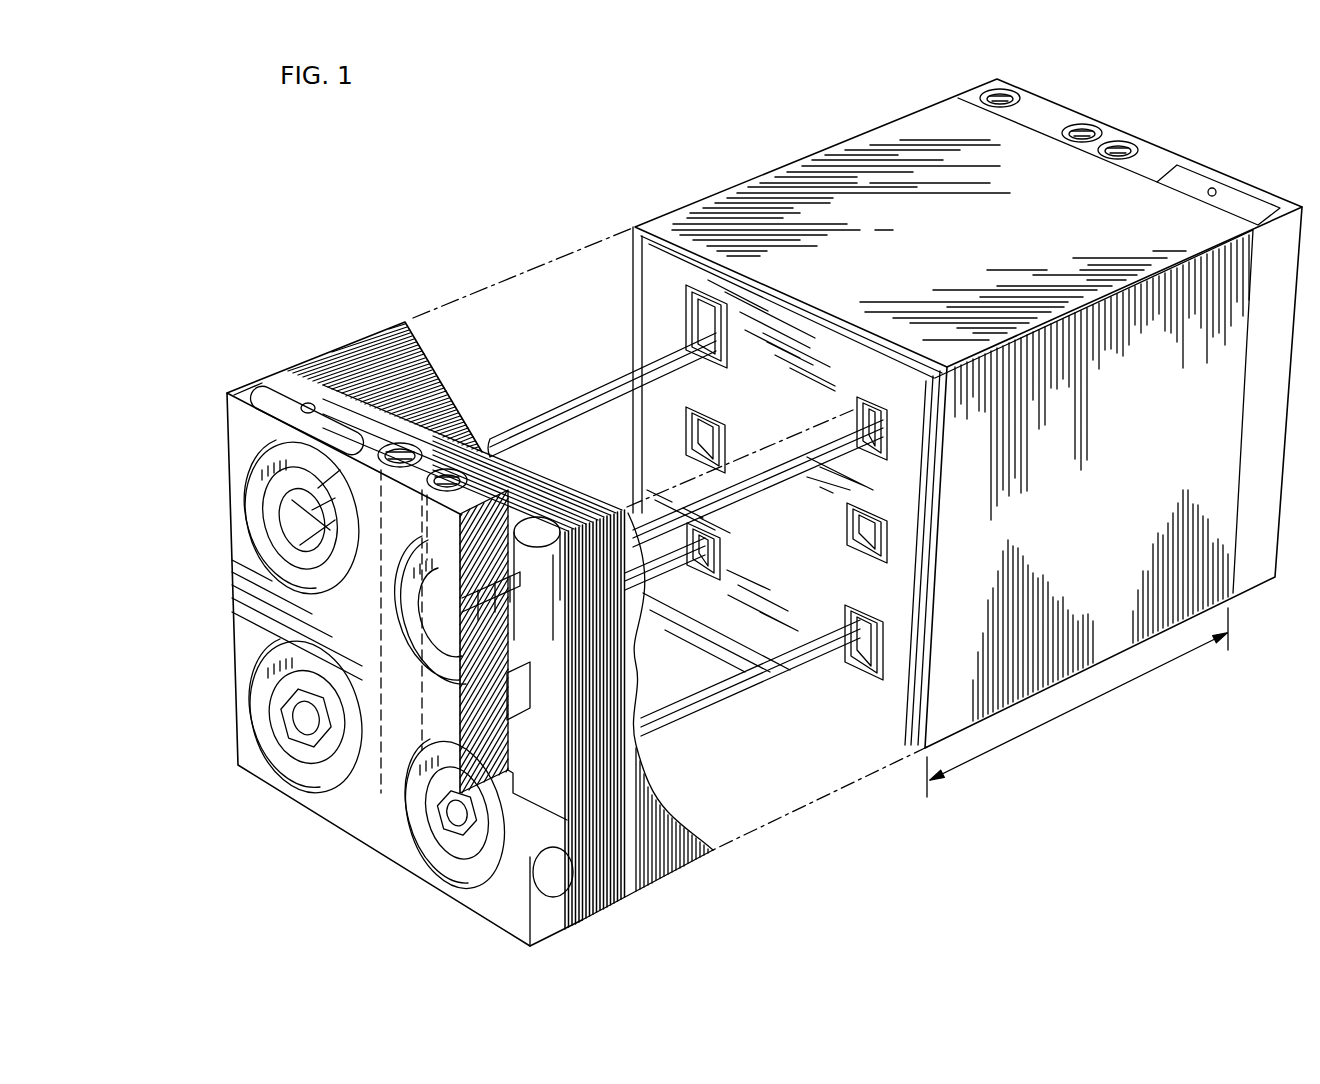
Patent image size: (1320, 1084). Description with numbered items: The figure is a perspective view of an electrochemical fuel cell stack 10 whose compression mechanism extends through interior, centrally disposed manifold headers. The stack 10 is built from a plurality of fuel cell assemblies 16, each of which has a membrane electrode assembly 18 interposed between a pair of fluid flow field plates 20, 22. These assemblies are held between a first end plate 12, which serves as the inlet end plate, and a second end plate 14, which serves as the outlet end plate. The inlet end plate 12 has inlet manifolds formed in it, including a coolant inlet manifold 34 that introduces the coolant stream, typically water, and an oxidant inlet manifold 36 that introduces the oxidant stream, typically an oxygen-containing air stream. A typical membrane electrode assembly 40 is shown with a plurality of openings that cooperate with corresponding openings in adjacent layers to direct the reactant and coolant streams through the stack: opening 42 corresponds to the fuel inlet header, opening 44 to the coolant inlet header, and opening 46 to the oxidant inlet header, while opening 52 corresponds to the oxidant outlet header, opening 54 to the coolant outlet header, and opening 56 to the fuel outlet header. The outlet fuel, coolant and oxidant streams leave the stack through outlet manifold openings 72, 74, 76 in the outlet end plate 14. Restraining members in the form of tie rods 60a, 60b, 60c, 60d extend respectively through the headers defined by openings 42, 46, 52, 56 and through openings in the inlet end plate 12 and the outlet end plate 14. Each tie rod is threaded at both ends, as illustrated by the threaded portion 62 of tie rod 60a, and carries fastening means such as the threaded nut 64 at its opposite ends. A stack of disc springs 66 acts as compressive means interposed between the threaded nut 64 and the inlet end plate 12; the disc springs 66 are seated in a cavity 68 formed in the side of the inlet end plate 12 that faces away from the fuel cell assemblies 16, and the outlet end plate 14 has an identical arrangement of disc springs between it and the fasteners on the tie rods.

The electrochemical fuel cell stack 10 is at (342, 217).
The first end plate 12 is at (237, 577).
The second end plate 14 is at (1157, 158).
The fuel cell assemblies 16 is at (1073, 713).
The membrane electrode assembly 18 is at (287, 368).
The fluid flow field plate 20 is at (268, 347).
The fluid flow field plate 22 is at (302, 358).
The coolant inlet manifold 34 is at (450, 468).
The oxidant inlet manifold 36 is at (395, 443).
The membrane electrode assembly 40 is at (660, 263).
The opening 42 is at (858, 398).
The opening 44 is at (887, 563).
The opening 46 is at (847, 670).
The opening 52 is at (680, 320).
The opening 54 is at (678, 413).
The opening 56 is at (743, 500).
The tie rod 60a is at (830, 650).
The tie rod 60b is at (770, 680).
The tie rod 60c is at (537, 408).
The tie rod 60d is at (673, 567).
The threaded portion 62 is at (450, 655).
The threaded nut 64 is at (287, 733).
The stack of disc springs 66 is at (337, 572).
The cavity 68 is at (247, 508).
The outlet manifold opening 72 is at (1118, 150).
The outlet manifold opening 74 is at (1082, 133).
The outlet manifold opening 76 is at (1003, 97).